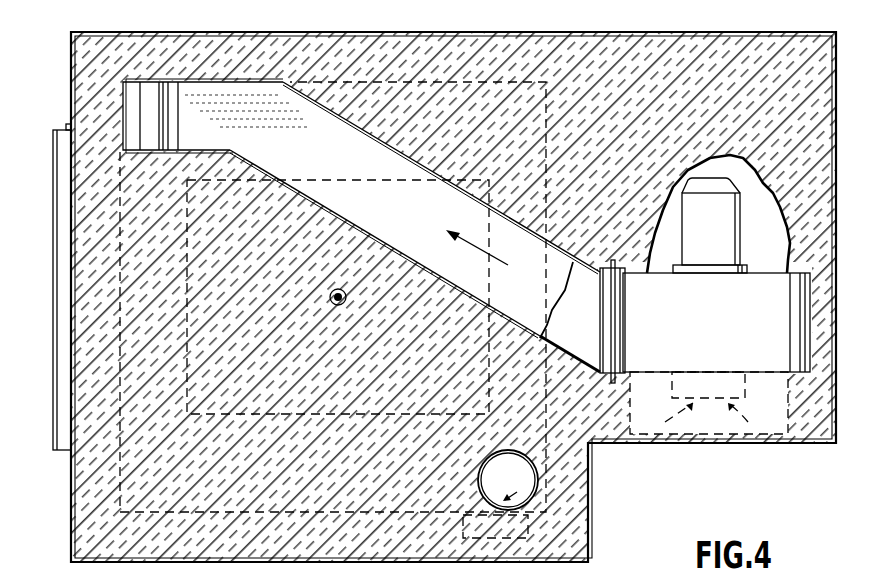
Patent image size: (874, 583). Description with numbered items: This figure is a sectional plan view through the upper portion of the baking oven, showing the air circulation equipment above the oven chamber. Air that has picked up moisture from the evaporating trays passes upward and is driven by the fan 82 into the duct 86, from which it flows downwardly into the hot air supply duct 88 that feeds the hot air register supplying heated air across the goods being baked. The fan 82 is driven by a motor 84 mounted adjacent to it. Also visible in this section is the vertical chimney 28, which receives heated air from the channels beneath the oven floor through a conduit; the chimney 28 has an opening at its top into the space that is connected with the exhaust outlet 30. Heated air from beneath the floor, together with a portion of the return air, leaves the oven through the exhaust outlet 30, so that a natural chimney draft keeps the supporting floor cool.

The hot air supply duct 88 is at (133, 110).
The duct 86 is at (424, 216).
The motor 84 is at (709, 226).
The fan 82 is at (706, 327).
The exhaust outlet 30 is at (538, 490).
The chimney 28 is at (528, 527).